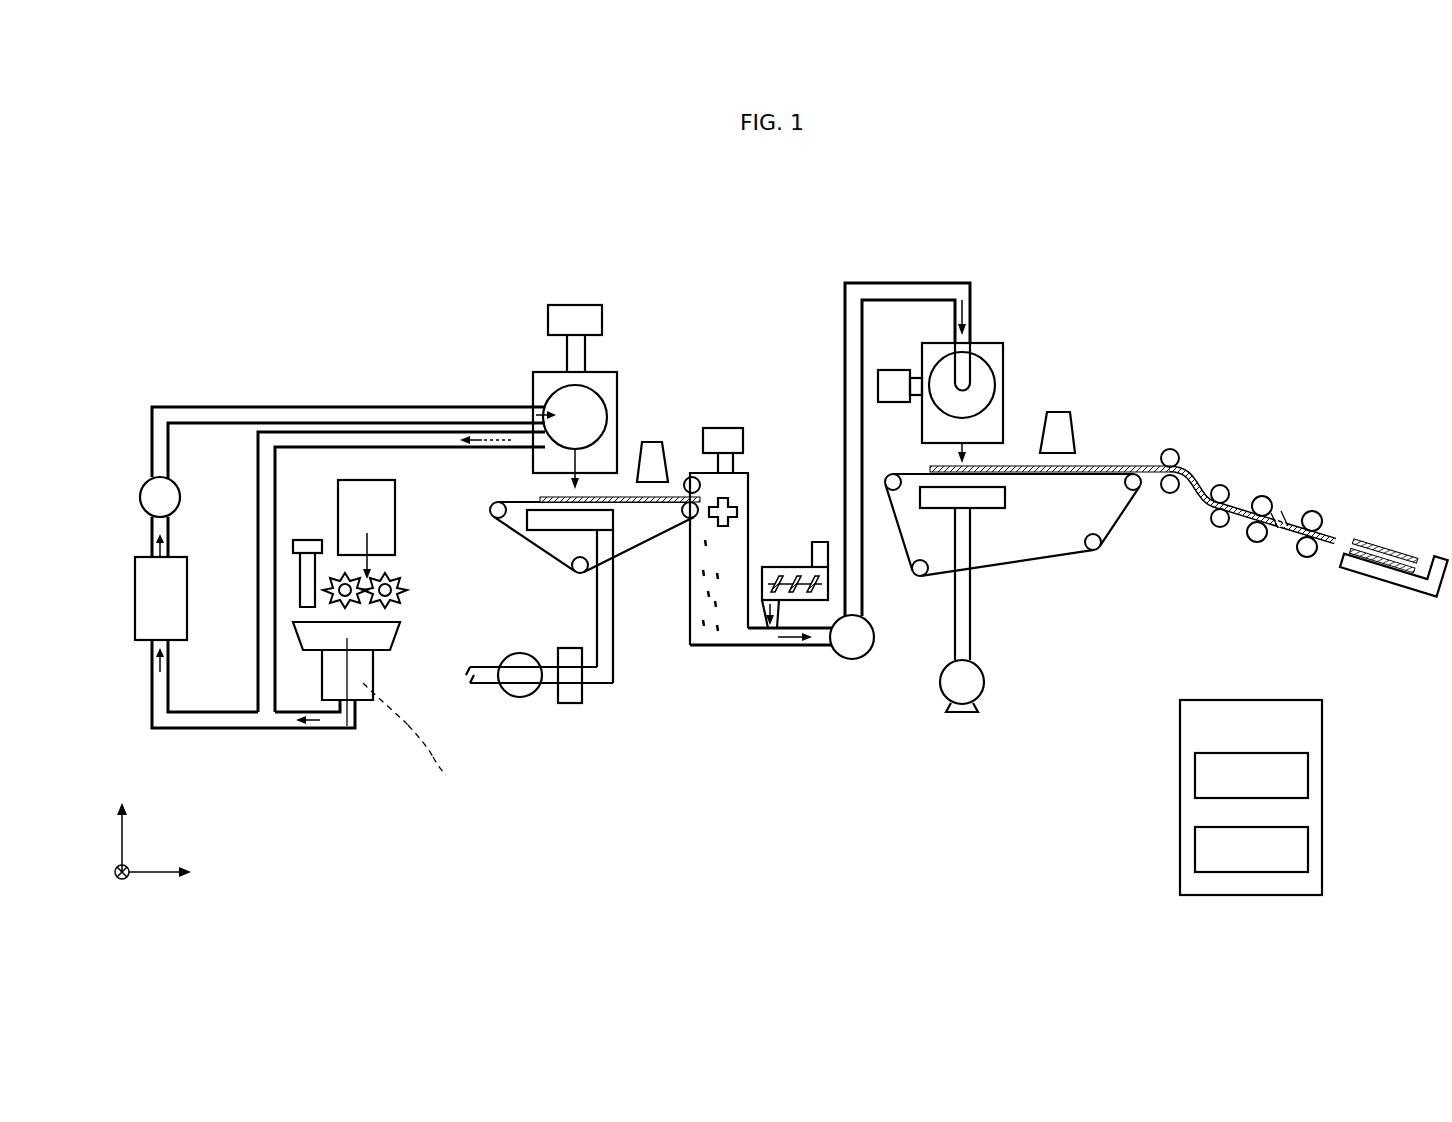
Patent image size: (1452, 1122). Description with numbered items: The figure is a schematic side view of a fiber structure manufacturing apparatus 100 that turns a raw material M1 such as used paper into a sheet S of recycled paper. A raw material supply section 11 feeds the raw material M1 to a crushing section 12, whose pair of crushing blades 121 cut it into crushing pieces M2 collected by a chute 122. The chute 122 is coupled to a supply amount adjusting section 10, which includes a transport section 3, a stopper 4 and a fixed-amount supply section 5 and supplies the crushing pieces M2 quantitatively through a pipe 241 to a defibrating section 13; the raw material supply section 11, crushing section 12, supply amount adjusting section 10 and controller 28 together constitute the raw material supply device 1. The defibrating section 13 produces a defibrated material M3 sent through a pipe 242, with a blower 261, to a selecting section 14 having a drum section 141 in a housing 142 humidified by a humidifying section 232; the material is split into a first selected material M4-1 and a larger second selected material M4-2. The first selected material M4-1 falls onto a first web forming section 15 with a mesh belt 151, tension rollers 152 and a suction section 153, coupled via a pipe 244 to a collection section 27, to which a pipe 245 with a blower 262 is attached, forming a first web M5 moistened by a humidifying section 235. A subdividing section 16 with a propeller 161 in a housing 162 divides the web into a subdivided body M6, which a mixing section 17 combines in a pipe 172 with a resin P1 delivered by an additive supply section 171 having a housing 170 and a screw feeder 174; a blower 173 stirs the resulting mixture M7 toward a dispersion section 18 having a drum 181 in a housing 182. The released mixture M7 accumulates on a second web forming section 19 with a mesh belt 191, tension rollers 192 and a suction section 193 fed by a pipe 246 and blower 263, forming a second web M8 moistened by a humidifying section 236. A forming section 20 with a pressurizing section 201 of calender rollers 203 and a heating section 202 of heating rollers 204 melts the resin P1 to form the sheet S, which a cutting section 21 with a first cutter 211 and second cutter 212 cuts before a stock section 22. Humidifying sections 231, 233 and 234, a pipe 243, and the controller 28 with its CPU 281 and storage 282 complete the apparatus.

The fiber structure manufacturing apparatus 100 is at (754, 248).
The raw material supply device 1 is at (389, 764).
The transport section 3 is at (416, 735).
The stopper 4 is at (451, 756).
The fixed-amount supply section 5 is at (473, 772).
The supply amount adjusting section 10 is at (321, 567).
The raw material supply section 11 is at (350, 478).
The crushing section 12 is at (416, 578).
The crushing blades 121 is at (356, 601).
The chute 122 is at (398, 642).
The defibrating section 13 is at (135, 598).
The selecting section 14 is at (642, 369).
The drum section 141 is at (605, 392).
The housing 142 is at (617, 374).
The first web forming section 15 is at (627, 585).
The mesh belt 151 is at (634, 550).
The tension rollers 152 is at (491, 506).
The suction section 153 is at (613, 513).
The subdividing section 16 is at (750, 476).
The propeller 161 is at (737, 505).
The housing 162 is at (700, 647).
The mixing section 17 is at (825, 668).
The housing 170 is at (828, 575).
The additive supply section 171 is at (806, 566).
The pipe 172 is at (862, 612).
The blower 173 is at (860, 658).
The screw feeder 174 is at (778, 584).
The dispersion section 18 is at (1034, 336).
The drum 181 is at (992, 364).
The housing 182 is at (996, 343).
The second web forming section 19 is at (1054, 576).
The mesh belt 191 is at (1010, 568).
The tension rollers 192 is at (890, 474).
The suction section 193 is at (1005, 497).
The forming section 20 is at (1216, 432).
The pressurizing section 201 is at (1207, 404).
The heating section 202 is at (1232, 580).
The calender rollers 203 is at (1160, 452).
The heating rollers 204 is at (1210, 505).
The cutting section 21 is at (1255, 420).
The first cutter 211 is at (1268, 524).
The second cutter 212 is at (1328, 540).
The stock section 22 is at (1392, 580).
The humidifying section 231 is at (310, 540).
The humidifying section 232 is at (575, 305).
The humidifying section 233 is at (722, 428).
The humidifying section 234 is at (896, 370).
The humidifying section 235 is at (660, 440).
The humidifying section 236 is at (1060, 412).
The pipe 241 is at (296, 732).
The pipe 242 is at (233, 406).
The pipe 243 is at (410, 430).
The pipe 244 is at (615, 650).
The pipe 245 is at (551, 688).
The pipe 246 is at (972, 634).
The blower 261 is at (146, 482).
The blower 262 is at (512, 697).
The blower 263 is at (984, 682).
The collection section 27 is at (576, 704).
The controller 28 is at (1180, 725).
The CPU 281 is at (1195, 777).
The storage 282 is at (1195, 850).
The raw material M1 is at (370, 546).
The crushing piece M2 is at (342, 732).
The defibrated material M3 is at (547, 410).
The first selected material M4-1 is at (560, 466).
The second selected material M4-2 is at (488, 432).
The first web M5 is at (684, 487).
The subdivided body M6 is at (713, 560).
The mixture M7 is at (795, 645).
The second web M8 is at (1026, 465).
The resin P1 is at (776, 608).
The sheet S is at (1237, 506).